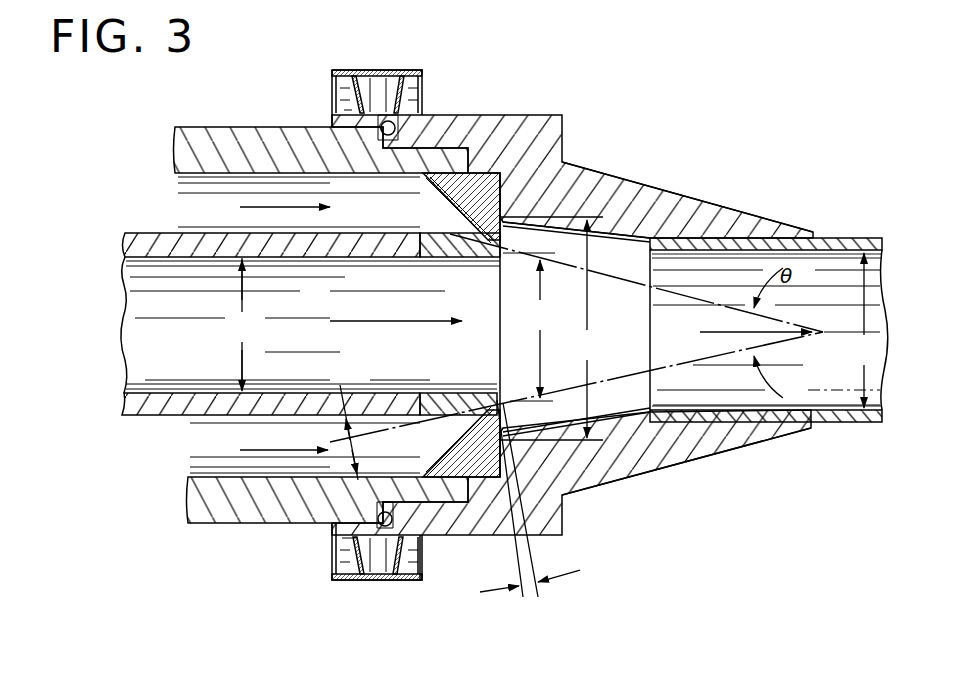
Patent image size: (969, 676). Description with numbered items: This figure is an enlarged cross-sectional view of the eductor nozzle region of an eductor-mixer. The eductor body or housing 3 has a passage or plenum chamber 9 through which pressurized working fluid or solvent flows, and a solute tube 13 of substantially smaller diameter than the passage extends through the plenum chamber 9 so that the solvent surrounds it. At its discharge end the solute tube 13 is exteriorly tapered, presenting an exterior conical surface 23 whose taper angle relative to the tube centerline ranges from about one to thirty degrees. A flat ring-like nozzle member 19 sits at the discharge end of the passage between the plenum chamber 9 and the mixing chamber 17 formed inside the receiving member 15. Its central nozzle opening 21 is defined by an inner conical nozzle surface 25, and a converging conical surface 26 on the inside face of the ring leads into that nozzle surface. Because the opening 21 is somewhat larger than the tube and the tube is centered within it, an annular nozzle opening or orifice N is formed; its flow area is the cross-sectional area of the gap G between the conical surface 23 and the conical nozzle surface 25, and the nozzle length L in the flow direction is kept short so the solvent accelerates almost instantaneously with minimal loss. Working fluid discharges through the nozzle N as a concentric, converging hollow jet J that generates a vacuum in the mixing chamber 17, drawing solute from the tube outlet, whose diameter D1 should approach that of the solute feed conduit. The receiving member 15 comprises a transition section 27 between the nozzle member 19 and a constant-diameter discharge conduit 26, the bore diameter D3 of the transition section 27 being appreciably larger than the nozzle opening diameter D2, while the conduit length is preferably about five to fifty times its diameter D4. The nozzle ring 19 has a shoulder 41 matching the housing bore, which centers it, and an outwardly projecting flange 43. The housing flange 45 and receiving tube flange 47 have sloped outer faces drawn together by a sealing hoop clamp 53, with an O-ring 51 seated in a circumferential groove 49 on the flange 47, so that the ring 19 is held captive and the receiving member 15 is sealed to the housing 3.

The eductor body or housing 3 is at (253, 524).
The plenum chamber or passage 9 is at (217, 452).
The solute tube 13 is at (128, 418).
The receiving member 15 is at (830, 226).
The mixing chamber 17 is at (650, 237).
The nozzle member 19 is at (563, 125).
The nozzle opening 21 is at (583, 225).
The exterior conical surface 23 is at (317, 130).
The conical nozzle surface 25 is at (505, 243).
The conical surface 26 is at (472, 242).
The transition section 27 is at (640, 236).
The shoulder 41 is at (452, 172).
The outwardly projecting flange 43 is at (528, 112).
The housing flange 45 is at (370, 100).
The receiving tube flange 47 is at (388, 92).
The circumferential groove 49 is at (407, 580).
The O-ring 51 is at (376, 560).
The sealing hoop clamp 53 is at (330, 575).
The diameter of the outlet end of the solute tube D1 is at (237, 324).
The diameter of nozzle opening D2 is at (537, 329).
The diameter of the transition section bore D3 is at (583, 329).
The diameter of the discharge conduit D4 is at (856, 330).
The gap G is at (340, 422).
The nozzle length L is at (537, 498).
The annular nozzle opening or orifice N is at (512, 412).
The hollow jet J is at (630, 368).